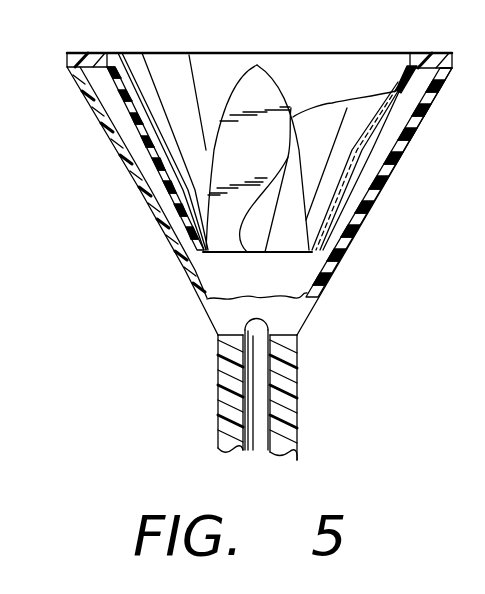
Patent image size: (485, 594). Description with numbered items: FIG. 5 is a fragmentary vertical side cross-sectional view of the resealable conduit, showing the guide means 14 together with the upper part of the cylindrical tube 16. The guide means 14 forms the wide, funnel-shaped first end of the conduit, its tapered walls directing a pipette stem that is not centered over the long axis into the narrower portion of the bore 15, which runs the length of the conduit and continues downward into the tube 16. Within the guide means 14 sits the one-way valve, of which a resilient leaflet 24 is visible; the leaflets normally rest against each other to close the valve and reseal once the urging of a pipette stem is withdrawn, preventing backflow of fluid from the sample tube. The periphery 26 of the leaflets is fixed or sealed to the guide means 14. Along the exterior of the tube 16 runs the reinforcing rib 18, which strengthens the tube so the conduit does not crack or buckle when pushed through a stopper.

The periphery 26 is at (77, 52).
The guide means 14 is at (113, 148).
The bore 15 is at (212, 268).
The leaflet 24 is at (287, 93).
The cylindrical tube 16 is at (297, 424).
The reinforcing rib 18 is at (262, 449).